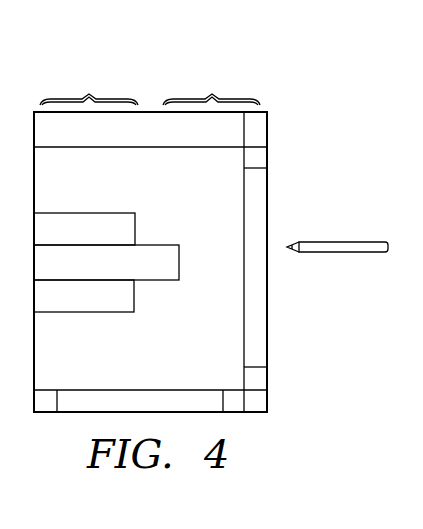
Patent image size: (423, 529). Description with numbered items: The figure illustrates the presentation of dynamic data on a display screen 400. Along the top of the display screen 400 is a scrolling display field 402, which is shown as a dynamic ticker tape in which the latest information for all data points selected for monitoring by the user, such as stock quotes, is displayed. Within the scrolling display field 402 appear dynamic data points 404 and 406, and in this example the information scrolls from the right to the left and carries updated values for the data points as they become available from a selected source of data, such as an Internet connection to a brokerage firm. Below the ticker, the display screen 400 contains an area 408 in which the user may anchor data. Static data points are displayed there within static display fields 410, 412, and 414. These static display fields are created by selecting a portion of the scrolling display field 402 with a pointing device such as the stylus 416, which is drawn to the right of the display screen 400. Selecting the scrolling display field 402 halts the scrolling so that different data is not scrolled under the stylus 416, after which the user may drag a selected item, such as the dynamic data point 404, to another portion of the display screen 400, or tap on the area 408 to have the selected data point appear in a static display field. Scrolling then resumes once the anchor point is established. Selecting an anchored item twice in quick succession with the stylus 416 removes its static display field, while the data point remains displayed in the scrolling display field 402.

The display screen 400 is at (268, 157).
The scrolling display field 402 is at (222, 138).
The dynamic data point 404 is at (89, 84).
The dynamic data point 406 is at (211, 84).
The area 408 is at (164, 370).
The static display field 410 is at (100, 213).
The static display field 412 is at (148, 245).
The static display field 414 is at (135, 297).
The stylus 416 is at (340, 242).